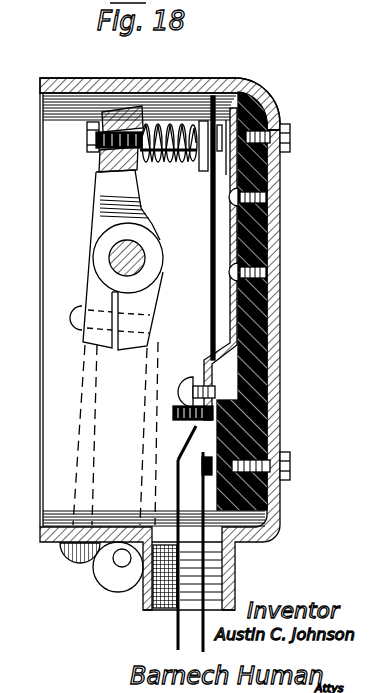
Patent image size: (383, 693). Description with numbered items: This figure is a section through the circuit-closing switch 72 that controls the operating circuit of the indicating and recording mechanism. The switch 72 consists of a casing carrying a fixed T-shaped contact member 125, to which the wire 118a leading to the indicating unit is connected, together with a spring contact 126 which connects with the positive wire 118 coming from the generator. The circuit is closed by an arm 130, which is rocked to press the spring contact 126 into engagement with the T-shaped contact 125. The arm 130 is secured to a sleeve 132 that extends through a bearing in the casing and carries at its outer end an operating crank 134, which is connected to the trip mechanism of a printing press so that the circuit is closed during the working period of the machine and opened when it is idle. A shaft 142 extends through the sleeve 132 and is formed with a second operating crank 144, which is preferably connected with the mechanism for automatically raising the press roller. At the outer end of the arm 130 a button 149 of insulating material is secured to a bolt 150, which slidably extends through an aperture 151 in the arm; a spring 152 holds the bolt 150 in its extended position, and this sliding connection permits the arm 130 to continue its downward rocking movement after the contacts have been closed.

The switch 72 is at (278, 298).
The positive wire 118 is at (203, 619).
The wire 118a is at (180, 611).
The T-shaped contact member 125 is at (283, 206).
The spring contact 126 is at (203, 222).
The arm 130 is at (110, 188).
The sleeve 132 is at (100, 266).
The operating crank 134 is at (118, 574).
The shaft 142 is at (114, 252).
The operating crank 144 is at (80, 550).
The button 149 is at (200, 123).
The bolt 150 is at (112, 138).
The aperture 151 is at (110, 112).
The spring 152 is at (157, 127).